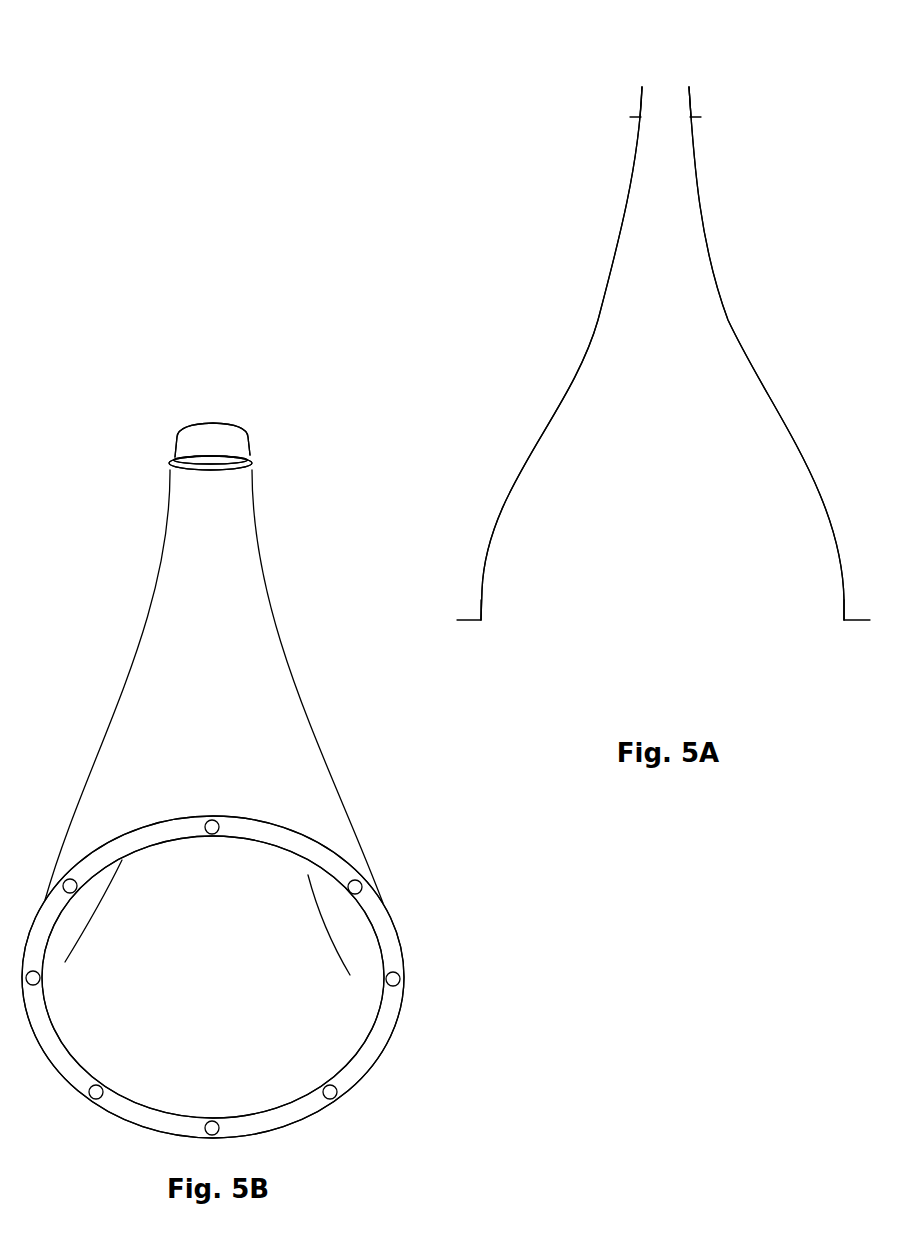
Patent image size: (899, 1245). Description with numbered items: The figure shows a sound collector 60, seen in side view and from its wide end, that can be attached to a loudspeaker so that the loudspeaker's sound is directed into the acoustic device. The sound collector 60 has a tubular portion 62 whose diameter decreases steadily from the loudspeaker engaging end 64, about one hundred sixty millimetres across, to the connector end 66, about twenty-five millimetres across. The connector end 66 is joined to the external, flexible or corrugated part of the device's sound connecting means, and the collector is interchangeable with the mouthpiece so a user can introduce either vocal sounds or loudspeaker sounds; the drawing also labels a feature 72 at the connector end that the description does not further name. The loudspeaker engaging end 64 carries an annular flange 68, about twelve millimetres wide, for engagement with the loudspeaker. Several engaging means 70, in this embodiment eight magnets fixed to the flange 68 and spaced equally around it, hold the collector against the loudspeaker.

In FIG. 5A, the sound collector 60 is at (445, 503).
In FIG. 5B, the sound collector 60 is at (396, 778).
In FIG. 5A, the tubular portion 62 is at (598, 289).
In FIG. 5A, the loudspeaker engaging end 64 is at (665, 553).
In FIG. 5A, the connector end 66 is at (672, 97).
In FIG. 5A, the annular flange 68 is at (465, 621).
In FIG. 5B, the annular flange 68 is at (360, 1082).
In FIG. 5B, the engaging means 70 is at (400, 980).
In FIG. 5B, the cap 72 is at (192, 455).